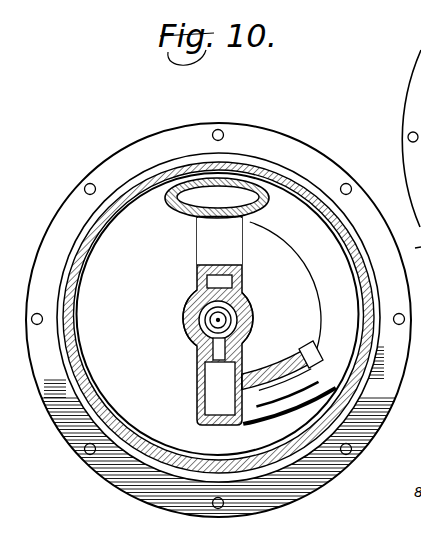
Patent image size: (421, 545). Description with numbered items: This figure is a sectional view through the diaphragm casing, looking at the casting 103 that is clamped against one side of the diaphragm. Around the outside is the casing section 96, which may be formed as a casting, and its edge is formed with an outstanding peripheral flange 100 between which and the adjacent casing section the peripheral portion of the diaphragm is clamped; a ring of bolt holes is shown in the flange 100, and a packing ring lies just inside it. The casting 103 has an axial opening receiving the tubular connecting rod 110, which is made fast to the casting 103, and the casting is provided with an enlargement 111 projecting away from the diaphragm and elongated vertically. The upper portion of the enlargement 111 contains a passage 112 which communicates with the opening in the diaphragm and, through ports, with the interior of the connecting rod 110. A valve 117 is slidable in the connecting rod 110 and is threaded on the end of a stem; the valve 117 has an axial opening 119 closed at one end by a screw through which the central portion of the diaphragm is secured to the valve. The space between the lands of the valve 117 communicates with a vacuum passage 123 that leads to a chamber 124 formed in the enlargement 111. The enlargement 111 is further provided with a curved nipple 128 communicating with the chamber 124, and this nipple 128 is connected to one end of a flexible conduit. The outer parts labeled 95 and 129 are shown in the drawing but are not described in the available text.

The casing cover plate 95 is at (303, 143).
The casing section 96 is at (272, 170).
The peripheral flange 100 is at (182, 133).
The casting 103 is at (193, 348).
The tubular connecting rod 110 is at (204, 308).
The enlargement 111 is at (197, 250).
The passage 112 is at (208, 281).
The valve 117 is at (252, 316).
The axial opening 119 is at (205, 320).
The vacuum passage 123 is at (222, 350).
The chamber 124 is at (215, 390).
The curved nipple 128 is at (246, 424).
The packing 129 is at (322, 283).